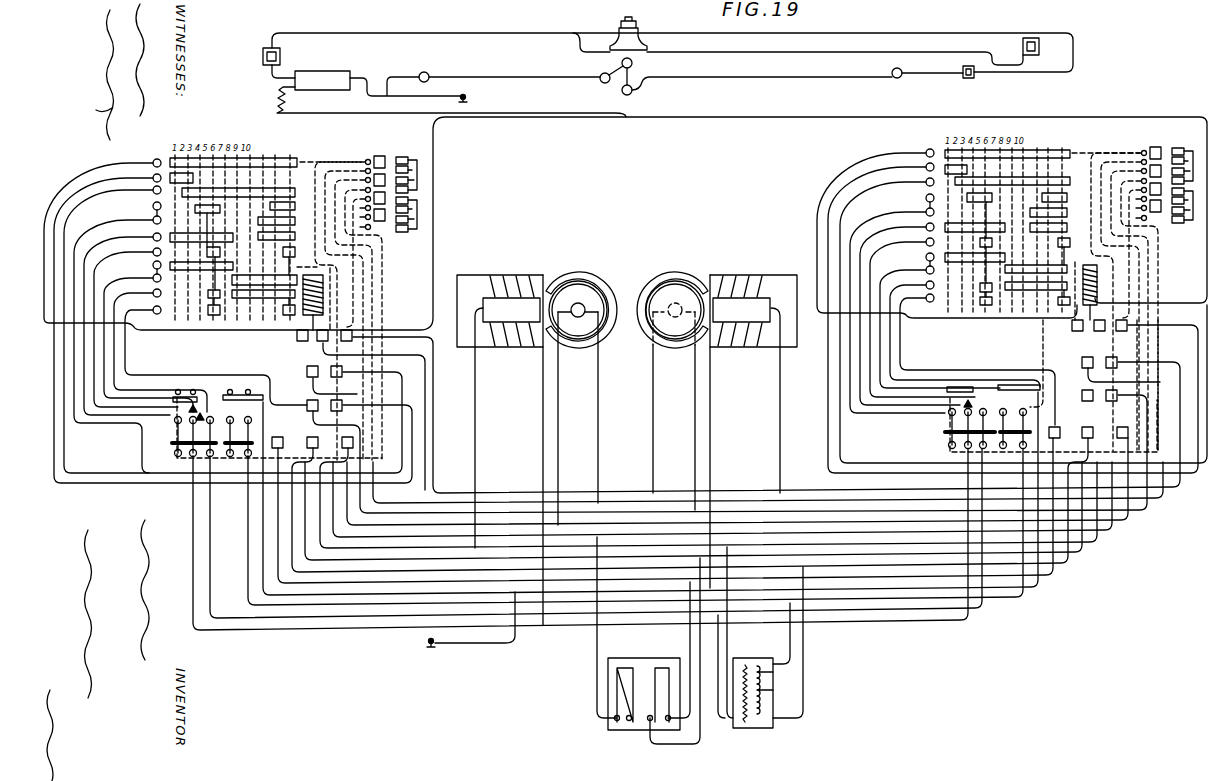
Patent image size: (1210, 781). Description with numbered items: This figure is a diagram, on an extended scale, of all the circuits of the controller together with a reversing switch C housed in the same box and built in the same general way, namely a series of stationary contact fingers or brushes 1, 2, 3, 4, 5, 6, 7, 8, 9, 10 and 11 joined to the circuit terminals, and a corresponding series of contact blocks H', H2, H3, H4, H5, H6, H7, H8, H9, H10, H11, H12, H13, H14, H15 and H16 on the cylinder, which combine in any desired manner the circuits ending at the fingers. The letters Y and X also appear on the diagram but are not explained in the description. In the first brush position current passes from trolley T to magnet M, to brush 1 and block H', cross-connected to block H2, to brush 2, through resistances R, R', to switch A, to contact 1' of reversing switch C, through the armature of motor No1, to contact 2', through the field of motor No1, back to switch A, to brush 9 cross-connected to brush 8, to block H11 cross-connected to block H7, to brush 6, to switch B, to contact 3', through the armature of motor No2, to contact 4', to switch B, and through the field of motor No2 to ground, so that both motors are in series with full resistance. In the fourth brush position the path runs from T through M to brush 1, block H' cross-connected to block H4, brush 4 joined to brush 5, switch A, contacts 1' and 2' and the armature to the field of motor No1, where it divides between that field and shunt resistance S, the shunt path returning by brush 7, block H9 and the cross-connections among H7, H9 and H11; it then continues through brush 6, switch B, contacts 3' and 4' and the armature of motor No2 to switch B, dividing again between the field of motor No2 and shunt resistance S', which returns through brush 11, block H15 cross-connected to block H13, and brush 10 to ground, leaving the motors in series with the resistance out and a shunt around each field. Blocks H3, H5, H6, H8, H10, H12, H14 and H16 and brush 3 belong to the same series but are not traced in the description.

The telephone station Y is at (263, 53).
The telephone station X is at (1039, 48).
The trolley T is at (612, 32).
The brush 1 is at (538, 395).
The brush 2 is at (538, 170).
The line terminal 3 is at (538, 183).
The brush 4 is at (538, 199).
The brush 5 is at (538, 213).
The brush 6 is at (538, 229).
The brush 7 is at (538, 244).
The brush 8 is at (538, 258).
The brush 9 is at (538, 271).
The brush 10 is at (536, 286).
The brush 11 is at (536, 301).
The contact block H' is at (627, 159).
The contact block H2 is at (579, 174).
The relay contact bar H3 is at (626, 180).
The contact block H4 is at (580, 204).
The relay contact H5 is at (661, 192).
The relay contact H6 is at (652, 214).
The contact block H7 is at (587, 227).
The relay contact H8 is at (661, 223).
The contact block H9 is at (586, 247).
The relay contact H10 is at (674, 240).
The contact block H11 is at (591, 255).
The relay contact bar H12 is at (649, 268).
The contact block H13 is at (592, 284).
The relay contact bar H14 is at (648, 298).
The contact block H15 is at (586, 305).
The relay contact H16 is at (663, 302).
The magnet M is at (323, 293).
The reversing switch C is at (377, 156).
The reversing switch contact 1' is at (772, 217).
The reversing switch contact 2' is at (772, 193).
The reversing switch contact 3' is at (772, 175).
The reversing switch contact 4' is at (762, 153).
The switch A is at (574, 422).
The switch B is at (631, 421).
The motor No. 1 No1 is at (537, 297).
The motor No. 2 No2 is at (717, 297).
The resistance R is at (638, 633).
The resistance R' is at (674, 651).
The shunt resistance S is at (745, 637).
The shunt resistance S' is at (780, 642).